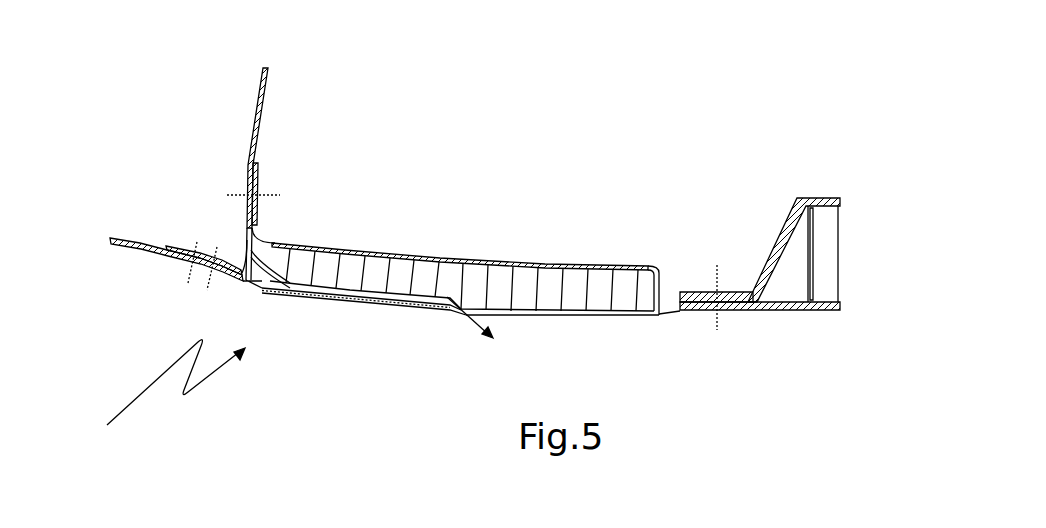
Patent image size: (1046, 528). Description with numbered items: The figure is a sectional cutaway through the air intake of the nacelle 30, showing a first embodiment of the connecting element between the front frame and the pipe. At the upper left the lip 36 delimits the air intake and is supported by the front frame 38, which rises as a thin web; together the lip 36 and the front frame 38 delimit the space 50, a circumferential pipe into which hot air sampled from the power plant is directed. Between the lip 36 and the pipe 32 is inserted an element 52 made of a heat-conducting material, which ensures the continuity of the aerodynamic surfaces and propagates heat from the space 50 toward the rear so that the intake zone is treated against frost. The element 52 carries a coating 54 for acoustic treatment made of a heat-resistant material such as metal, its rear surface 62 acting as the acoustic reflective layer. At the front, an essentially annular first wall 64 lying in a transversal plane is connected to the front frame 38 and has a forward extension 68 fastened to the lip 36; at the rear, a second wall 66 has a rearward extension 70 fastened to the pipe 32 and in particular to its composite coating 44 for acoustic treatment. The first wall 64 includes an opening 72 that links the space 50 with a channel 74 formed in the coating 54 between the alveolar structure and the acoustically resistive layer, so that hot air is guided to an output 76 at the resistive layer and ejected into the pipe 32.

The nacelle 30 is at (157, 392).
The pipe 32 is at (760, 316).
The lip 36 is at (112, 247).
The front frame 38 is at (262, 118).
The coating for acoustic treatment 44 is at (820, 227).
The space 50 is at (192, 203).
The element made of heat-conducting material 52 is at (453, 260).
The coating for acoustic treatment 54 is at (538, 282).
The rear surface 62 is at (347, 247).
The first wall 64 is at (250, 253).
The second wall 66 is at (658, 283).
The extension 68 is at (167, 246).
The extension 70 is at (698, 313).
The opening 72 is at (276, 193).
The channel 74 is at (362, 300).
The output 76 is at (452, 310).